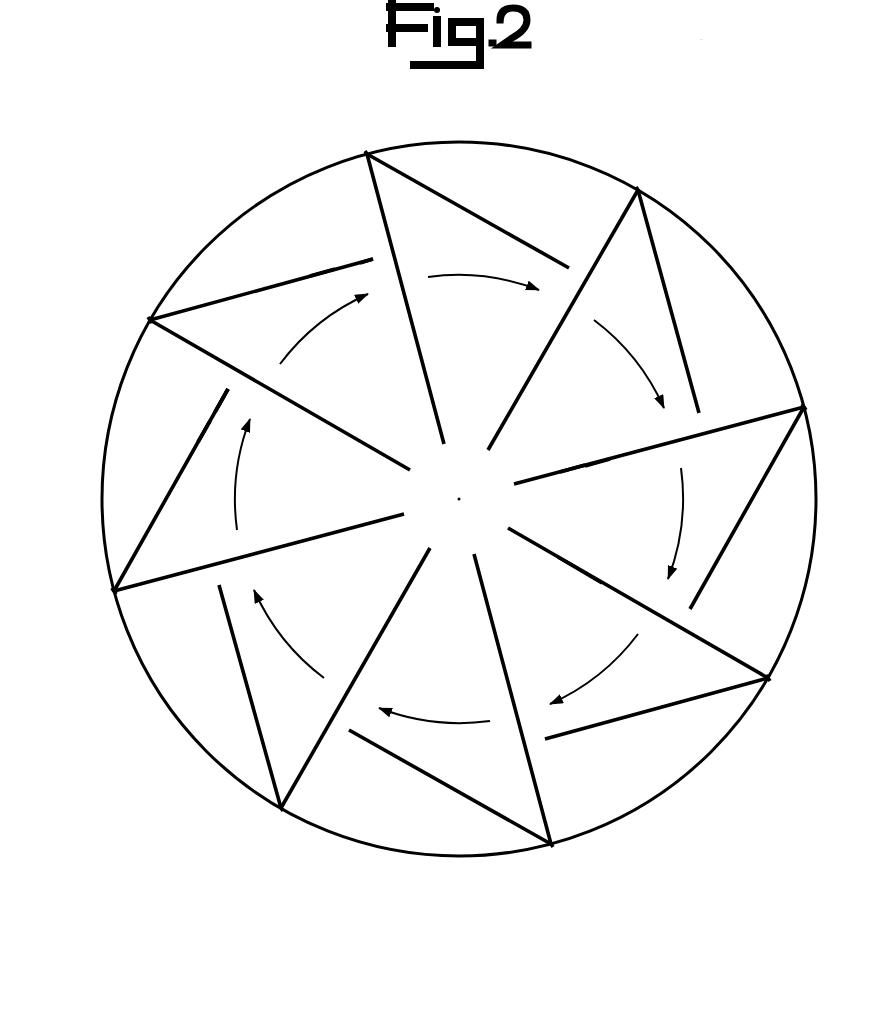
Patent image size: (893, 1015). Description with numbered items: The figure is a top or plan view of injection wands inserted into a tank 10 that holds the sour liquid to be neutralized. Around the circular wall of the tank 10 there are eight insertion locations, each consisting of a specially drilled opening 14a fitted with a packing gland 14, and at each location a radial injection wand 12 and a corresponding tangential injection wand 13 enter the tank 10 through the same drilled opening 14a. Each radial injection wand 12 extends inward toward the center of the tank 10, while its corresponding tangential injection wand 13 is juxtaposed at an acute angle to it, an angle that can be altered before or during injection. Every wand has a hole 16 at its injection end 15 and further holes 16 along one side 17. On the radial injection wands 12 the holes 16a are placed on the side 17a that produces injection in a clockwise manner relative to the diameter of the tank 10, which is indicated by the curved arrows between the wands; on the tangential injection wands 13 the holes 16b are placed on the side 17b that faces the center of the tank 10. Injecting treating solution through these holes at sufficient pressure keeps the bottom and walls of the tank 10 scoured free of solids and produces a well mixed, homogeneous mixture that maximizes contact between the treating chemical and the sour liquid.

The tank 10 is at (558, 153).
The radial injection wand 12 is at (417, 340).
The tangential injection wand 13 is at (288, 280).
The packing gland 14 is at (365, 151).
The drilled opening 14a is at (112, 592).
The injection end 15 is at (377, 258).
The hole 16 is at (322, 275).
The holes of radial injection wand 16a is at (568, 560).
The holes of tangential injection wand 16b is at (205, 446).
The side 17 is at (573, 472).
The side of radial injection wand 17a is at (590, 577).
The side of tangential injection wand 17b is at (229, 408).